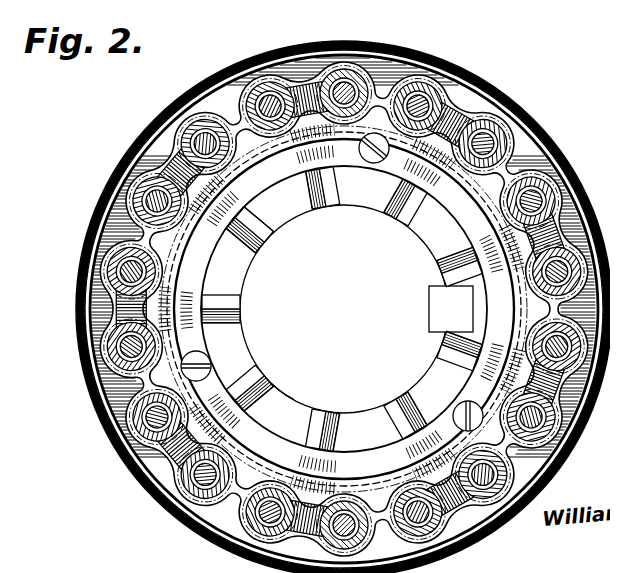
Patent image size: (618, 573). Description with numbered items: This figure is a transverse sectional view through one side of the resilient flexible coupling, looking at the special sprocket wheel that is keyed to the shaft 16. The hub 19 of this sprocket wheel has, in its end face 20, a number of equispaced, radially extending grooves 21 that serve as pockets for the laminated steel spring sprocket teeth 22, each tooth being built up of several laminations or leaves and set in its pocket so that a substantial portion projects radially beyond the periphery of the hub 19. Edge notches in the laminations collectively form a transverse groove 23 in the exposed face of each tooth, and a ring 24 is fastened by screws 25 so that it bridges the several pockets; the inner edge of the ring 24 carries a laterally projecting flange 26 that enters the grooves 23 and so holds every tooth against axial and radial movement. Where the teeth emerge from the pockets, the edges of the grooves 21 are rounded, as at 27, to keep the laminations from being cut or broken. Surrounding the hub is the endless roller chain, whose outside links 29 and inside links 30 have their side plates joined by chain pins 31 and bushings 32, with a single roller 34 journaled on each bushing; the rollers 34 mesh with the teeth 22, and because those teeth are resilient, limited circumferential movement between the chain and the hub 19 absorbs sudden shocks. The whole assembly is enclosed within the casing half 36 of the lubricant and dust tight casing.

The shaft 16 is at (356, 309).
The hub 19 is at (291, 392).
The end face 20 is at (364, 189).
The grooves 21 is at (255, 237).
The laminated steel spring sprocket teeth 22 is at (312, 195).
The transverse groove 23 is at (324, 442).
The ring 24 is at (455, 204).
The screws 25 is at (448, 405).
The laterally projecting flange 26 is at (209, 250).
The rounded edges 27 is at (213, 162).
The outside links 29 is at (376, 76).
The inside links 30 is at (451, 98).
The chain pins 31 is at (478, 138).
The bushings 32 is at (420, 122).
The roller 34 is at (538, 191).
The casing half 36 is at (100, 189).